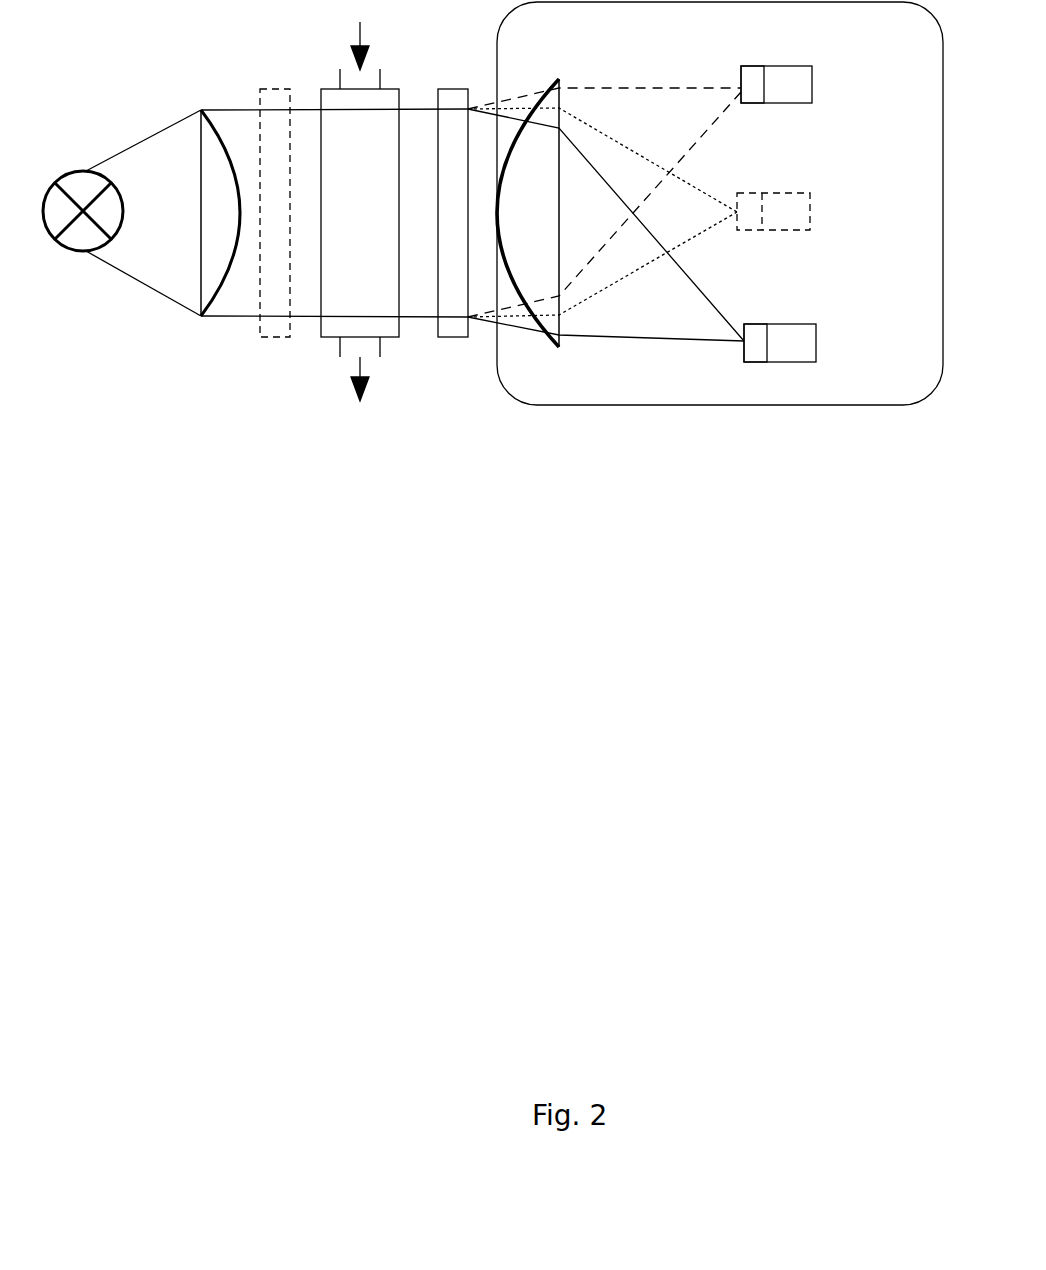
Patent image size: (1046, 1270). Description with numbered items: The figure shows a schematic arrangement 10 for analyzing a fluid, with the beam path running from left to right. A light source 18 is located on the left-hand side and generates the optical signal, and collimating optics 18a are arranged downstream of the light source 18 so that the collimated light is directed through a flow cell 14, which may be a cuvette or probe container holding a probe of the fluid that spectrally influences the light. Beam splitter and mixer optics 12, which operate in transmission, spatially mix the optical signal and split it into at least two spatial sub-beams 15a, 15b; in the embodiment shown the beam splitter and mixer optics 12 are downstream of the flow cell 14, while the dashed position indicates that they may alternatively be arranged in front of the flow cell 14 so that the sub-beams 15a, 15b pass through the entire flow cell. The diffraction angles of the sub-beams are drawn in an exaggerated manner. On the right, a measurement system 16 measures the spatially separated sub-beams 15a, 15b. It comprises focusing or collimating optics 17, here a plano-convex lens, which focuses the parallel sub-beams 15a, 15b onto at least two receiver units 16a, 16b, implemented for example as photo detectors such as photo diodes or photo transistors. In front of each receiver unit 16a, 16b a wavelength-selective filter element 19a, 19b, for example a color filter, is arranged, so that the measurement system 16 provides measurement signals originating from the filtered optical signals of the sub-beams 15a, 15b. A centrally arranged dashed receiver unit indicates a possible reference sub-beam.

The arrangement 10 is at (347, 731).
The beam splitter and mixer optics 12 is at (277, 345).
The flow cell 14 is at (433, 345).
The spatial sub-beam 15a is at (627, 88).
The spatial sub-beam 15b is at (624, 330).
The measurement system 16 is at (925, 408).
The receiver unit 16a is at (798, 58).
The receiver unit 16b is at (801, 315).
The focusing or collimating optics 17 is at (565, 133).
The light source 18 is at (73, 166).
The collimating optics 18a is at (193, 108).
The wavelength-selective filter element 19a is at (752, 72).
The wavelength-selective filter element 19b is at (754, 330).